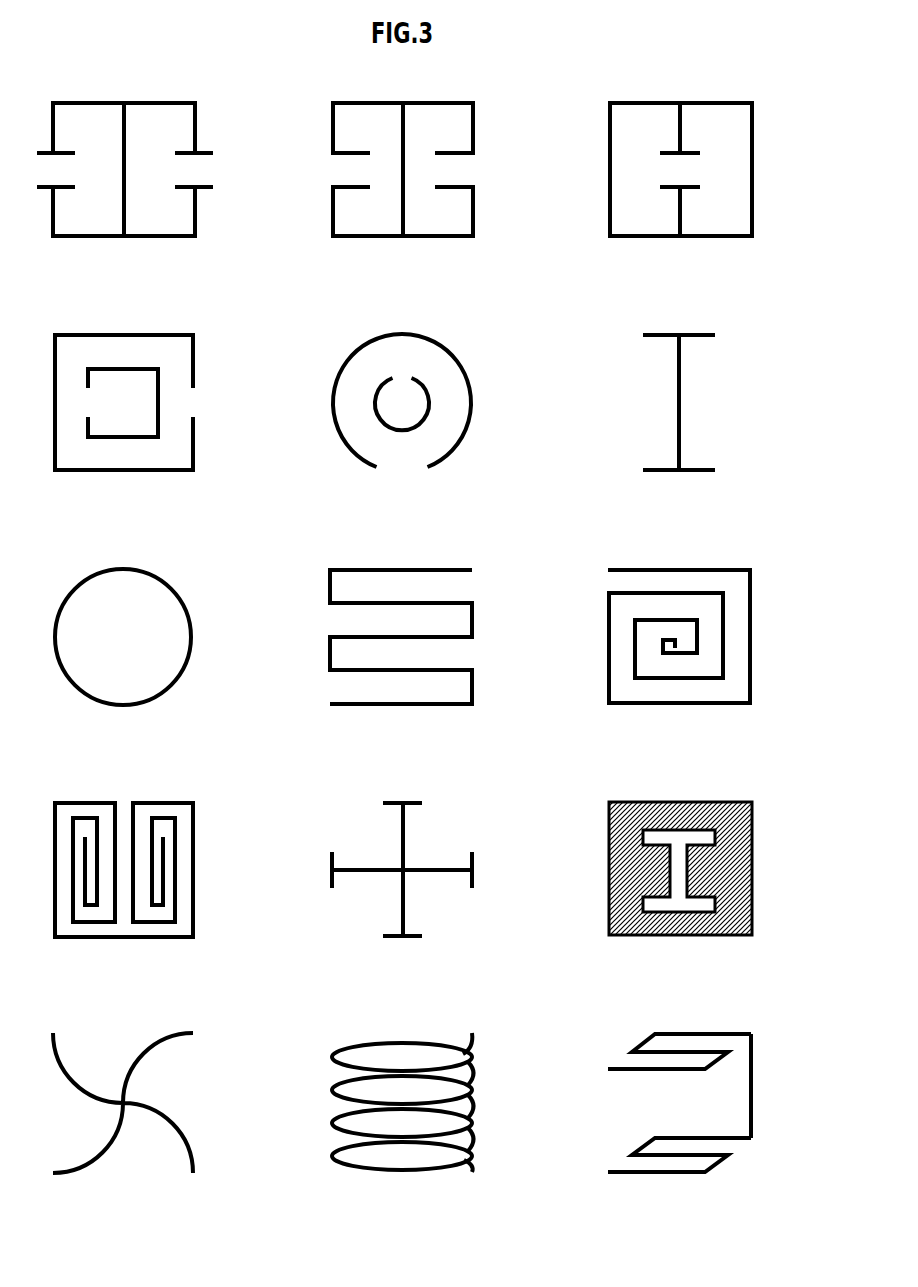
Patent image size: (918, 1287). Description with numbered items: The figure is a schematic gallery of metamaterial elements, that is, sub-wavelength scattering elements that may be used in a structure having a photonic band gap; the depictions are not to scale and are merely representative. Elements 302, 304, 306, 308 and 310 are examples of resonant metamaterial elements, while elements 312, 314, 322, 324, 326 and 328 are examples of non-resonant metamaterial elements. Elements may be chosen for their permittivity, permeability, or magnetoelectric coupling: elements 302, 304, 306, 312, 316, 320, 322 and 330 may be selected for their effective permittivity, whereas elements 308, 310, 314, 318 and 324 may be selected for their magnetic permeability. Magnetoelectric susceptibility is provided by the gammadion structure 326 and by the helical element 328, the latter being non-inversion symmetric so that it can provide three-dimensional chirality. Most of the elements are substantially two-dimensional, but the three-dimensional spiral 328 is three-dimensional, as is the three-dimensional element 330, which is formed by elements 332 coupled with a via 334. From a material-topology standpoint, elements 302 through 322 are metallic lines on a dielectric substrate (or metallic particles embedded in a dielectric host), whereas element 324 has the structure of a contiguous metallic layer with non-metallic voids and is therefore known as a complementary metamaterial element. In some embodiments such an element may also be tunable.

The resonant metamaterial element 302 is at (125, 186).
The resonant metamaterial element 304 is at (403, 186).
The resonant metamaterial element 306 is at (681, 186).
The resonant metamaterial element 308 is at (124, 419).
The resonant metamaterial element 310 is at (402, 419).
The non-resonant metamaterial element 312 is at (679, 419).
The non-resonant metamaterial element 314 is at (123, 652).
The metamaterial element 316 is at (401, 652).
The metamaterial element 318 is at (679, 652).
The metamaterial element 320 is at (124, 885).
The non-resonant metamaterial element 322 is at (402, 885).
The complementary metamaterial element 324 is at (680, 885).
The gammadion structure 326 is at (123, 1119).
The 3D spiral 328 is at (403, 1119).
The 3D element 330 is at (687, 1119).
The elements 332 is at (620, 1072).
The via 334 is at (751, 1077).